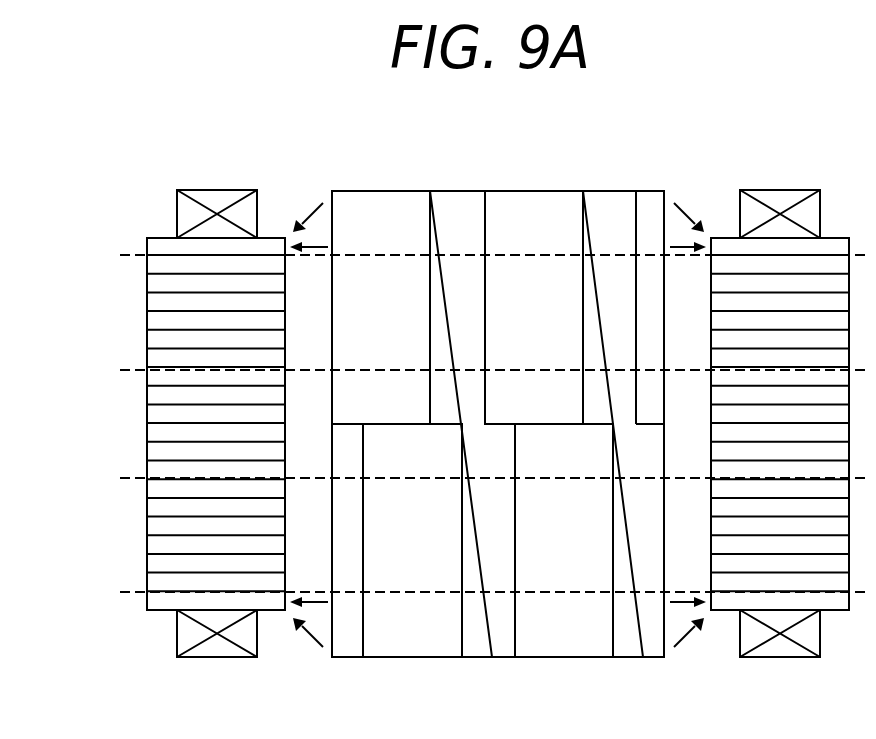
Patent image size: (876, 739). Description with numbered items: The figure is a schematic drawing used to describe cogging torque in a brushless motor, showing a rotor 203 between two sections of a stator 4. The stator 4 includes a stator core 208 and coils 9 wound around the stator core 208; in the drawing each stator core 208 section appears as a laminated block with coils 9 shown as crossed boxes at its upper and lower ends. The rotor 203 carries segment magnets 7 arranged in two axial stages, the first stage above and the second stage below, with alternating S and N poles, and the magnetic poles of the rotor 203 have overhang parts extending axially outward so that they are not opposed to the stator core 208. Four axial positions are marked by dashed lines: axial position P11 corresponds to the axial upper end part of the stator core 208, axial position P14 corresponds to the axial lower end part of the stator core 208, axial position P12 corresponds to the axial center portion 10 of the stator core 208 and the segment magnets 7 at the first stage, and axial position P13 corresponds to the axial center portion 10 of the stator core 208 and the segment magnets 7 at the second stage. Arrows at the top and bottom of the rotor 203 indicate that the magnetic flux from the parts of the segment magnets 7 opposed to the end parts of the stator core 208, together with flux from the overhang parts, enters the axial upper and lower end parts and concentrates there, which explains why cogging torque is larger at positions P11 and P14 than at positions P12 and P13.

The stator 4 is at (803, 182).
The segment magnet 7 is at (383, 210).
The coil 9 is at (227, 212).
The axial center portion 10 is at (215, 423).
The rotor 203 is at (560, 182).
The stator core 208 is at (140, 236).
The axial position P11 is at (470, 257).
The axial position P12 is at (470, 372).
The axial position P13 is at (470, 480).
The axial position P14 is at (470, 594).